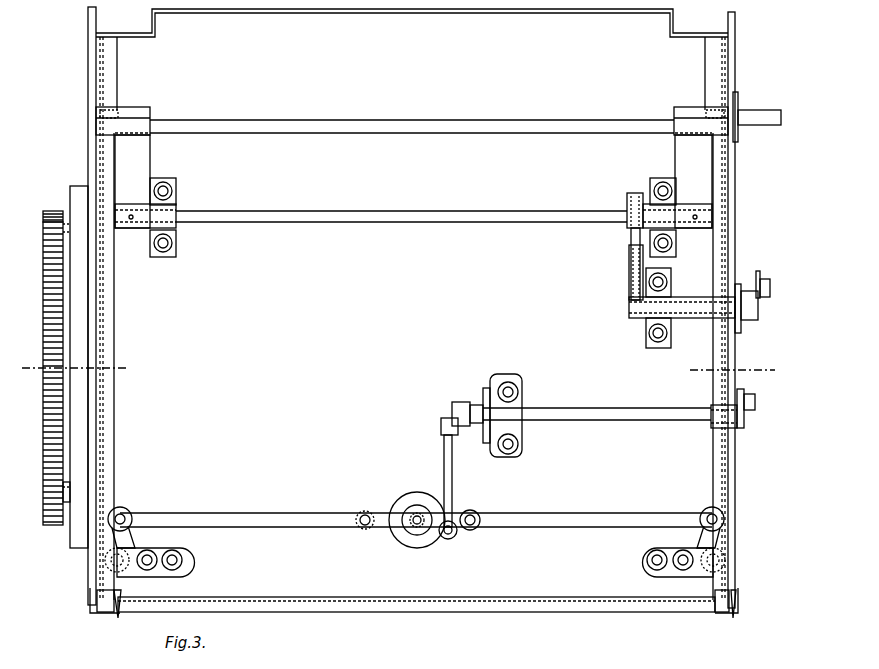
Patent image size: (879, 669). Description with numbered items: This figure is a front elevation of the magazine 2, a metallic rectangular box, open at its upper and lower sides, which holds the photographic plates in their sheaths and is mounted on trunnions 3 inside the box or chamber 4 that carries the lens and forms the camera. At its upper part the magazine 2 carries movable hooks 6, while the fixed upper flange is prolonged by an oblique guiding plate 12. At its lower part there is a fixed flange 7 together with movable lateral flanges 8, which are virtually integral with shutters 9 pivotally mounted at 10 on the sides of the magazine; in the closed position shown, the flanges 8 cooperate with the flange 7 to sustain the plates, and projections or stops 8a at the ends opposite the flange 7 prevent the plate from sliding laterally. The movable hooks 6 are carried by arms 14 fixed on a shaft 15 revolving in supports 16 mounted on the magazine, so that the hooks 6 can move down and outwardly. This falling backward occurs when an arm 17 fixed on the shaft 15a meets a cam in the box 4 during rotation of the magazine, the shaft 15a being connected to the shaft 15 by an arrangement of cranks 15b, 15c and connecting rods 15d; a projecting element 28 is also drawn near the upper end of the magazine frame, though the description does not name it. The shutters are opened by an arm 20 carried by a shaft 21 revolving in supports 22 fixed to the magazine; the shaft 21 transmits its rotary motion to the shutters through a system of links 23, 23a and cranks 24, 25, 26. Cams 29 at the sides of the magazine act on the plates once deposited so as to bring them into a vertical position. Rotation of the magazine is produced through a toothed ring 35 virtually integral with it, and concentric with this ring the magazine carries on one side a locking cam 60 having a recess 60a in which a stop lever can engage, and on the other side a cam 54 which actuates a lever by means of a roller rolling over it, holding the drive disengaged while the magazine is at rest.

The magazine 2 is at (303, 366).
The trunnions 3 is at (53, 370).
The box or chamber 4 is at (397, 359).
The movable hooks 6 is at (131, 117).
The fixed flange 7 is at (273, 614).
The movable lateral flanges 8 is at (108, 614).
The projections or stops 8a is at (106, 602).
The shutters 9 is at (88, 600).
The pivot 10 is at (105, 562).
The oblique guiding plate 12 is at (300, 12).
The arms 14 is at (413, 180).
The shaft 15 is at (412, 214).
The shaft 15a is at (696, 310).
The crank 15b is at (629, 288).
The crank 15c is at (627, 208).
The connecting rods 15d is at (631, 241).
The supports 16 is at (178, 238).
The arm 17 is at (760, 279).
The arm 20 is at (746, 420).
The shaft 21 is at (622, 412).
The supports 22 is at (492, 382).
The link 23 is at (453, 478).
The links 23a is at (262, 514).
The crank 24 is at (456, 432).
The crank 25 is at (390, 534).
The cranks 26 is at (128, 540).
The shaft end 28 is at (757, 115).
The cams 29 is at (117, 435).
The toothed ring 35 is at (52, 213).
The cam 54 is at (76, 432).
The locking cam 60 is at (62, 282).
The recess 60a is at (66, 498).